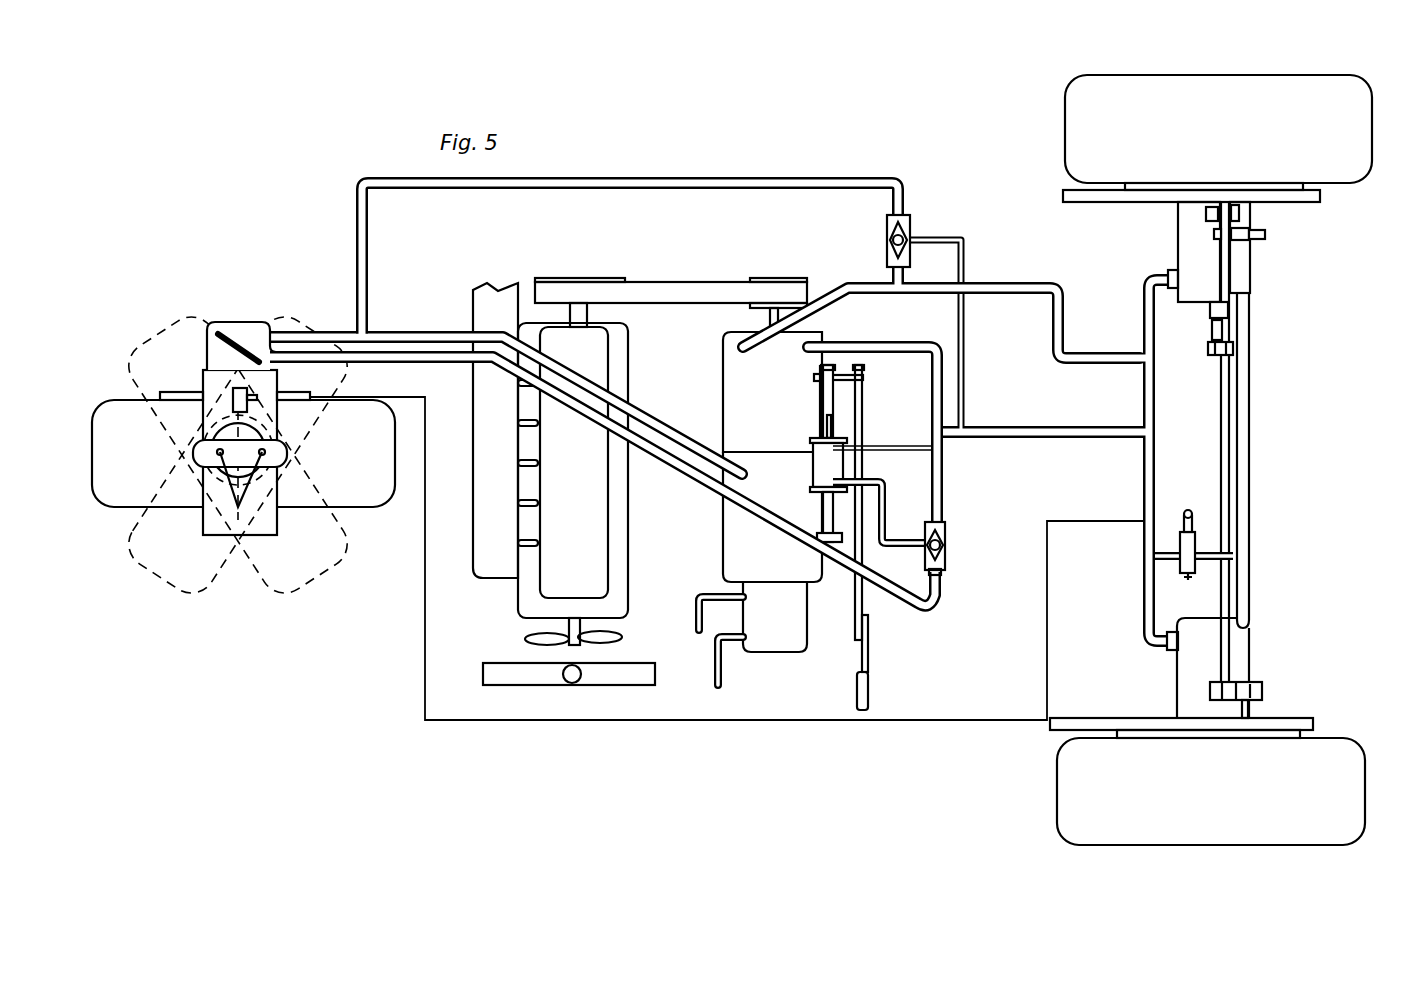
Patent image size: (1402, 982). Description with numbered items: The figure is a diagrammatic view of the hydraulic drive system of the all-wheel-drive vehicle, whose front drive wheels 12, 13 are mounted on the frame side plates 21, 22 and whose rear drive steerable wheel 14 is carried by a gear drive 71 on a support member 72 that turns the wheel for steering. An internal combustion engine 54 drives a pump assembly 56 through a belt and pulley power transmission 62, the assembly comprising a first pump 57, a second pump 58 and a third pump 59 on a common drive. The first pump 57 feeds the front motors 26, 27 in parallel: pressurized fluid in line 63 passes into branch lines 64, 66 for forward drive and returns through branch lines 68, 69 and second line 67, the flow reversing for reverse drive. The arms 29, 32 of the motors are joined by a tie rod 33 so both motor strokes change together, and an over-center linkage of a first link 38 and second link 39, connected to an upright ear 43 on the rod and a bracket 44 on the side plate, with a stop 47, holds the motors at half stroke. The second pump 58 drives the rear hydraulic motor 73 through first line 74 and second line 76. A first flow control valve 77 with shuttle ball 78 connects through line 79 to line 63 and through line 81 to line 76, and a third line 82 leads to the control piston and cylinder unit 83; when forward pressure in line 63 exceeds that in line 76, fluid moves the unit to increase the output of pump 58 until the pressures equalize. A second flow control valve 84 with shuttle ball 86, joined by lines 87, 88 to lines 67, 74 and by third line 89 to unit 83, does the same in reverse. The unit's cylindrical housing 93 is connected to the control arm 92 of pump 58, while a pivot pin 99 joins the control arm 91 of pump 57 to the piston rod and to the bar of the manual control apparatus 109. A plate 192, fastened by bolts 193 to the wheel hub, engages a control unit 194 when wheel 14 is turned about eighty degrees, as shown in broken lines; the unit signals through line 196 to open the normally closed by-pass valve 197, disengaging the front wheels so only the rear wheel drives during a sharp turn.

The front drive wheel 12 is at (1352, 740).
The front drive wheel 13 is at (1360, 84).
The rear drive steerable wheel 14 is at (377, 497).
The longitudinal side plate 21 is at (1302, 718).
The longitudinal side plate 22 is at (1322, 196).
The first motor 26 is at (1243, 647).
The second motor 27 is at (1242, 270).
The upright arm 29 is at (1254, 688).
The upright arm 32 is at (1256, 240).
The tie rod 33 is at (1229, 452).
The first link 38 is at (1212, 330).
The second link 39 is at (1221, 255).
The upright ear 43 is at (1233, 347).
The bracket 44 is at (1206, 212).
The stop or projection 47 is at (1217, 307).
The internal combustion engine 54 is at (583, 521).
The pump assembly 56 is at (746, 508).
The first pump 57 is at (780, 417).
The second pump 58 is at (763, 557).
The third pump 59 is at (788, 627).
The belt and pulley power transmission 62 is at (687, 288).
The line 63 is at (1058, 291).
The branch line 64 is at (1249, 328).
The branch line 66 is at (1249, 498).
The second line 67 is at (1078, 428).
The branch line 68 is at (1143, 488).
The branch line 69 is at (1152, 388).
The gear drive 71 is at (293, 396).
The support member 72 is at (203, 380).
The hydraulic motor 73 is at (207, 350).
The first line 74 is at (668, 459).
The second line 76 is at (672, 432).
The first flow control valve 77 is at (912, 222).
The shuttle ball 78 is at (887, 238).
The line 79 is at (893, 273).
The line 81 is at (678, 178).
The third line 82 is at (966, 258).
The control piston and cylinder unit 83 is at (861, 471).
The second flow control valve 84 is at (947, 567).
The shuttle ball 86 is at (946, 543).
The line 87 is at (943, 483).
The line 88 is at (940, 595).
The third line 89 is at (897, 533).
The control arm 91 is at (850, 357).
The control arm 92 is at (822, 540).
The cylindrical housing 93 is at (810, 442).
The pivot pin 99 is at (814, 377).
The manual control apparatus 109 is at (870, 647).
The plate or arm 192 is at (277, 452).
The bolts 193 is at (238, 473).
The control unit 194 is at (233, 403).
The line 196 is at (252, 391).
The by-pass valve 197 is at (1185, 569).